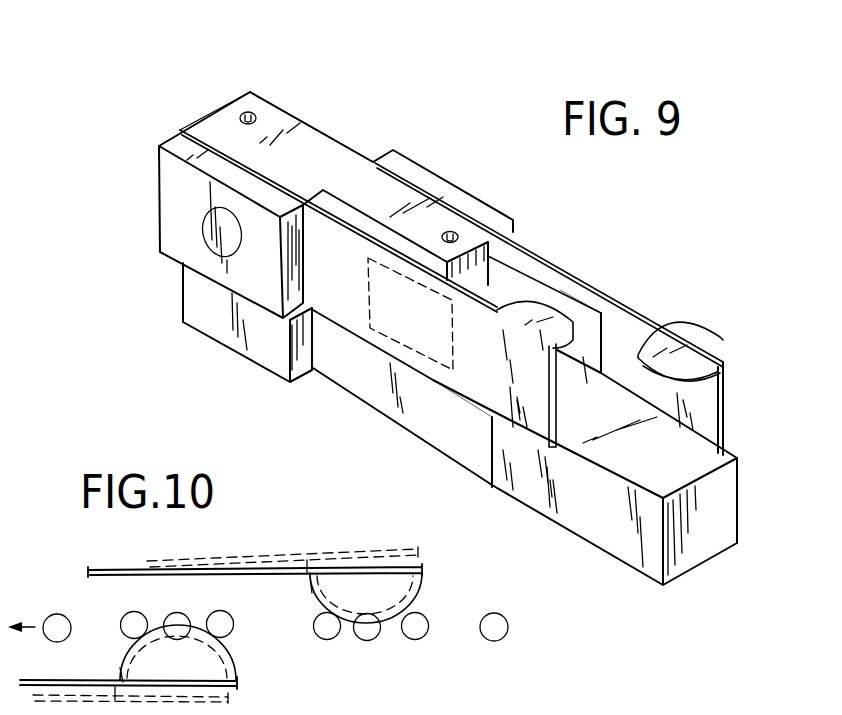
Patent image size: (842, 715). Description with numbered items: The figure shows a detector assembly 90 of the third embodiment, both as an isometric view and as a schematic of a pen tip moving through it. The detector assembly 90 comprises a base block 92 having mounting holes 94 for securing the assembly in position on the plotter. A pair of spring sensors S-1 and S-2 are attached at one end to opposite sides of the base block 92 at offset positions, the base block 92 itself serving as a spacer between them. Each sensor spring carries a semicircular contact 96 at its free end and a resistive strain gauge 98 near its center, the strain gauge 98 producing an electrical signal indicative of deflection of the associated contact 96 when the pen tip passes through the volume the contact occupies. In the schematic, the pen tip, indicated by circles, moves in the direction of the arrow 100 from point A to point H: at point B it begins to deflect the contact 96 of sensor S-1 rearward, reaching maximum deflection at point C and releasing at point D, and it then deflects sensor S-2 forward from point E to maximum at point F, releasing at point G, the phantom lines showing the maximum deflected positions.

In FIG. 9, the detector assembly 90 is at (414, 88).
In FIG. 9, the base block 92 is at (250, 103).
In FIG. 9, the mounting holes 94 is at (250, 118).
In FIG. 9, the semicircular contact 96 is at (693, 357).
In FIG. 9, the resistive strain gauge 98 is at (532, 283).
In FIG. 9, the spring sensor S-1 is at (600, 288).
In FIG. 9, the spring sensor S-2 is at (466, 372).
In FIG. 10, the arrow 100 is at (572, 623).